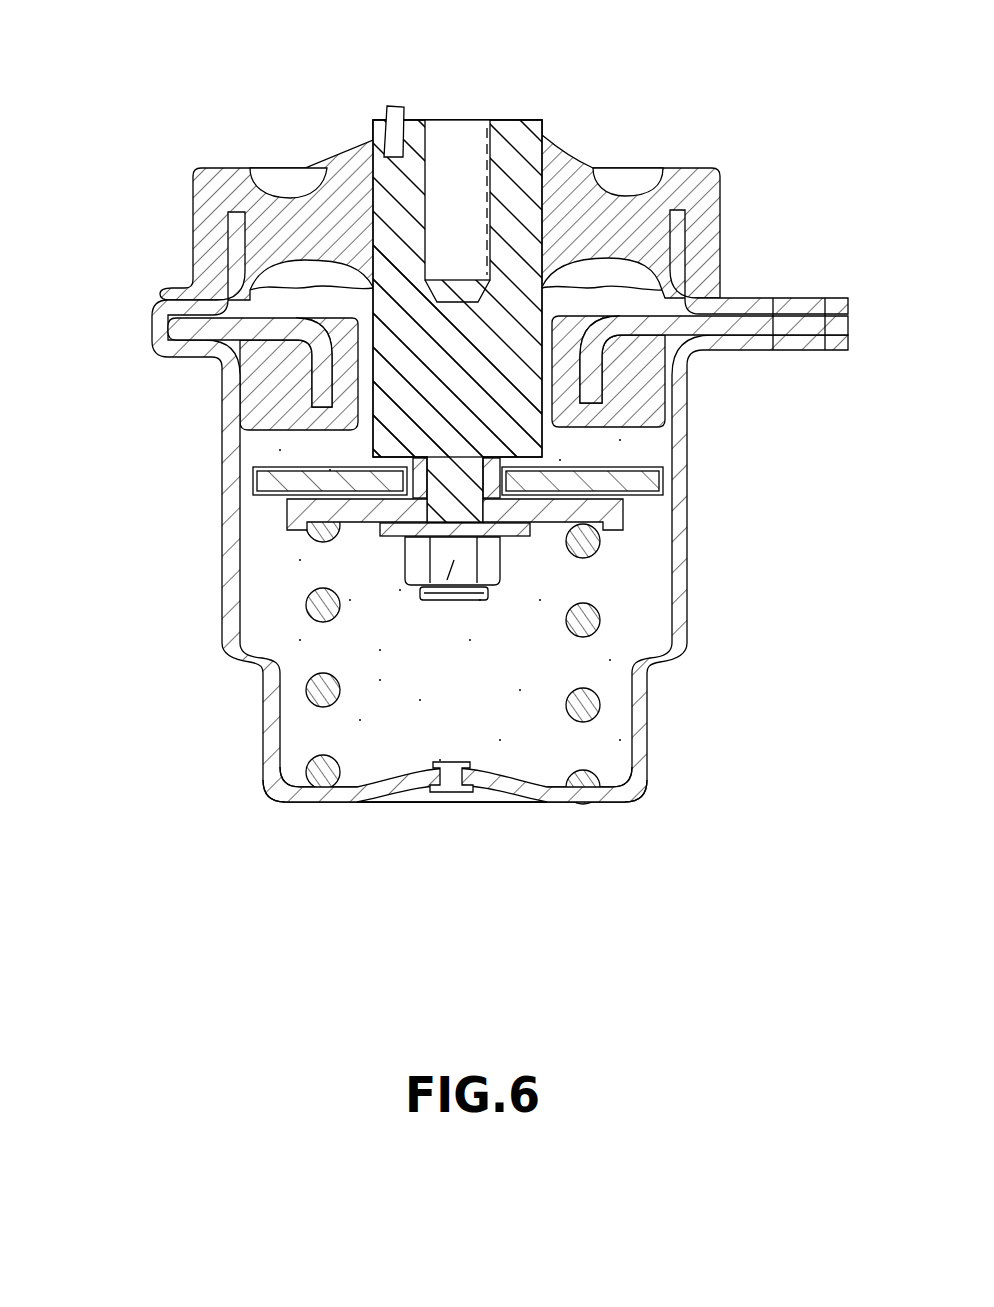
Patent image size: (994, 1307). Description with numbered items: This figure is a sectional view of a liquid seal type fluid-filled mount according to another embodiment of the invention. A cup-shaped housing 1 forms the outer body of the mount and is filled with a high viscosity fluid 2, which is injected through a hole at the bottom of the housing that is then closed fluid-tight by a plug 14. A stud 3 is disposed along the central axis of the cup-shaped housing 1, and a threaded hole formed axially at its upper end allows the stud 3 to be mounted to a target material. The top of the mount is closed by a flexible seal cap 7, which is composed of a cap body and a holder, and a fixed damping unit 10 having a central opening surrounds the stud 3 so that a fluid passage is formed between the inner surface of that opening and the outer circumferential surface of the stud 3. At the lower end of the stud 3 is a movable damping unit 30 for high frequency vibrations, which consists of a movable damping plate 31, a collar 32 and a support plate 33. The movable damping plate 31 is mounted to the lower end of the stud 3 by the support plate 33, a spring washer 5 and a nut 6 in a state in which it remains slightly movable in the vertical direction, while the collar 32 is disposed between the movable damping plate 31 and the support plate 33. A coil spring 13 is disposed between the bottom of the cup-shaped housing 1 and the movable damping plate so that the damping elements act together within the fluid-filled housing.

The cup-shaped housing 1 is at (640, 742).
The high viscosity fluid 2 is at (377, 742).
The stud 3 is at (513, 150).
The spring washer 5 is at (385, 532).
The nut 6 is at (435, 600).
The flexible seal cap 7 is at (613, 207).
The fixed damping unit 10 is at (270, 382).
The coil spring 13 is at (312, 695).
The plug 14 is at (452, 792).
The movable damping unit for high frequency vibrations 30 is at (398, 490).
The movable damping plate 31 is at (640, 480).
The collar 32 is at (548, 464).
The support plate 33 is at (607, 510).